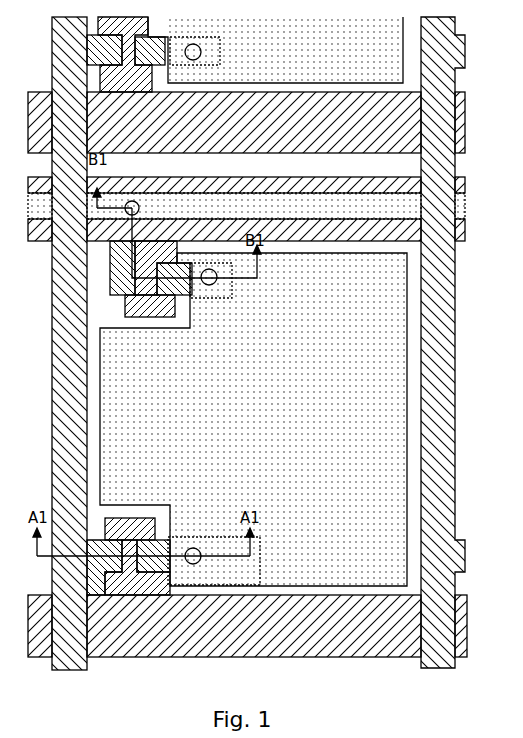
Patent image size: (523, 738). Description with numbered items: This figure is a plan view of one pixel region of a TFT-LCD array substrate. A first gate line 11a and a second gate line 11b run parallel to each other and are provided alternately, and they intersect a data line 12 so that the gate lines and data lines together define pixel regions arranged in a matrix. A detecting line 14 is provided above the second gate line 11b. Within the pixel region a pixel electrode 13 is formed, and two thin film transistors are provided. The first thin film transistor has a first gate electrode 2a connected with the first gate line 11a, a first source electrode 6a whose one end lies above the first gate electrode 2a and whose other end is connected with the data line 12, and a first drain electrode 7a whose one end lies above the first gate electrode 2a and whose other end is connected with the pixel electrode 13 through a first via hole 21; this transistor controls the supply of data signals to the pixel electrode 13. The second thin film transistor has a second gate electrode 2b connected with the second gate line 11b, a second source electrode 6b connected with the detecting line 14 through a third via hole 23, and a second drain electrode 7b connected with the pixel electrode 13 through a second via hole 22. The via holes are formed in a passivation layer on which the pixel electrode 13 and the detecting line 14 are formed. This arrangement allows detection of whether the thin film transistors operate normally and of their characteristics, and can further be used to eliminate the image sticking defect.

The first gate line 11a is at (362, 570).
The second gate line 11b is at (392, 277).
The data line 12 is at (135, 450).
The pixel electrode 13 is at (330, 620).
The detecting line 14 is at (337, 277).
The first gate electrode 2a is at (190, 475).
The second gate electrode 2b is at (210, 197).
The first source electrode 6a is at (85, 618).
The second source electrode 6b is at (105, 333).
The first drain electrode 7a is at (143, 618).
The second drain electrode 7b is at (230, 333).
The first via hole 21 is at (245, 507).
The second via hole 22 is at (277, 335).
The third via hole 23 is at (180, 172).